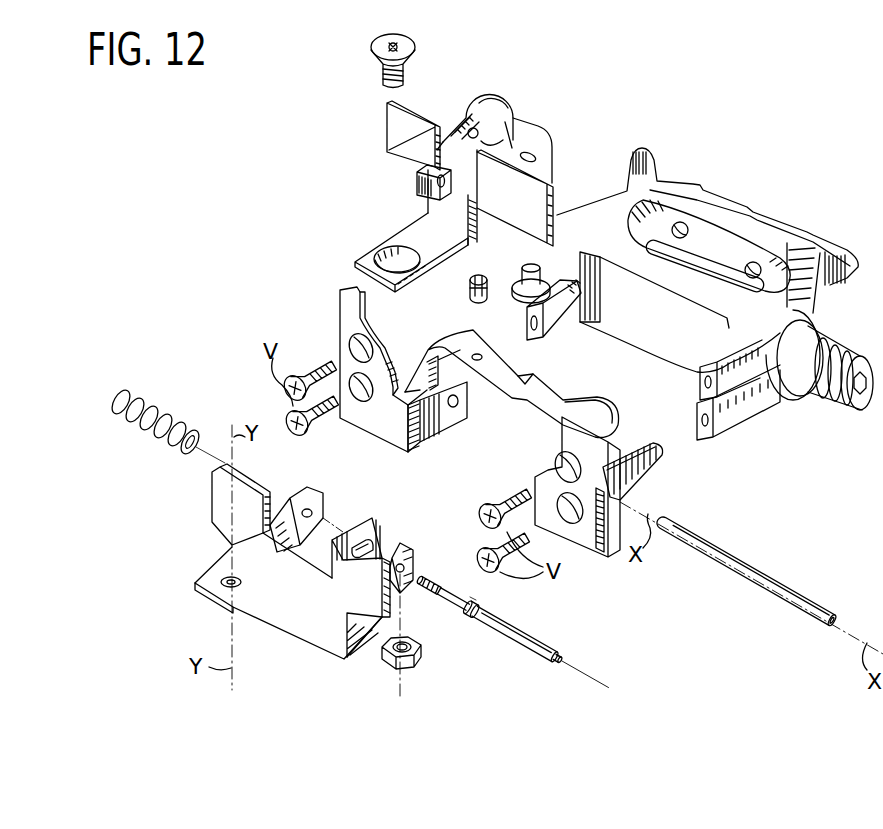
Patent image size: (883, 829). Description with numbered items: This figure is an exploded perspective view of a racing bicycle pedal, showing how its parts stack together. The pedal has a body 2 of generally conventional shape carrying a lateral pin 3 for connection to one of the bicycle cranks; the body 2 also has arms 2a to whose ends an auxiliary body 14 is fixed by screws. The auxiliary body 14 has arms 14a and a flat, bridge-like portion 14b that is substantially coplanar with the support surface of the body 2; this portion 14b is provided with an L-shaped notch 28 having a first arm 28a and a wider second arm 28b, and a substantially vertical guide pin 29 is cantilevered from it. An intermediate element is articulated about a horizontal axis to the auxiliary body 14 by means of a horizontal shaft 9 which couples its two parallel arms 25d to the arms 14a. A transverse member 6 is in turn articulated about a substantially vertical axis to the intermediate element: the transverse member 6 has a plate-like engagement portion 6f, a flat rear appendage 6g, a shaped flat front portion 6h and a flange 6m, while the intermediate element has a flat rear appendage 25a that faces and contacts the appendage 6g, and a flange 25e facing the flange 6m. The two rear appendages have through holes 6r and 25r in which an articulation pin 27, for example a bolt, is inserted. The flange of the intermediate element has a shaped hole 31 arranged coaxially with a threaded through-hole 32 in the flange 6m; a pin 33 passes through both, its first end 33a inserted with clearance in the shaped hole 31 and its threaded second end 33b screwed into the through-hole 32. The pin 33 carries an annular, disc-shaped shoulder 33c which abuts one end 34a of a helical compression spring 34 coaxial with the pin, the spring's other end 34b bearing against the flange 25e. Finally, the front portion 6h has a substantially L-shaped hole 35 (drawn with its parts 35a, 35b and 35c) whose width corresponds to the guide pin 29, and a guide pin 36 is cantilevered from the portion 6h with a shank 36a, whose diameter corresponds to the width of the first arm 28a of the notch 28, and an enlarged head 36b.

The body 2 is at (747, 327).
The arms 2a is at (598, 300).
The lateral pin 3 is at (830, 405).
The transverse member 6 is at (521, 108).
The plate-like engagement portion 6f is at (530, 200).
The flat rear appendage 6g is at (412, 238).
The shaped flat front portion 6h is at (513, 147).
The flange 6m is at (417, 187).
The through hole 6r is at (374, 252).
The horizontal shaft 9 is at (777, 593).
The auxiliary body 14 is at (578, 558).
The arms 14a is at (440, 436).
The flat bridge-like portion 14b is at (437, 424).
The flat rear appendage 25a is at (252, 562).
The parallel arms 25d is at (318, 495).
The flange 25e is at (362, 520).
The through hole 25r is at (220, 582).
The articulation pin 27 is at (373, 50).
The L-shaped notch 28 is at (543, 387).
The first arm 28a is at (528, 373).
The second arm 28b is at (585, 396).
The guide pin 29 is at (468, 288).
The shaped hole 31 is at (360, 560).
The threaded through-hole 32 is at (387, 123).
The pin 33 is at (510, 633).
The first end 33a is at (548, 660).
The second threaded end 33b is at (440, 594).
The annular disc-shaped shoulder 33c is at (477, 607).
The helical compression spring 34 is at (167, 402).
The spring end 34a is at (119, 393).
The spring end 34b is at (194, 428).
The L-shaped hole 35 is at (461, 111).
The hole 35a is at (477, 128).
The slot 35b is at (450, 127).
The arch 35c is at (485, 117).
The guide pin 36 is at (543, 264).
The shank 36a is at (521, 267).
The enlarged head 36b is at (553, 330).